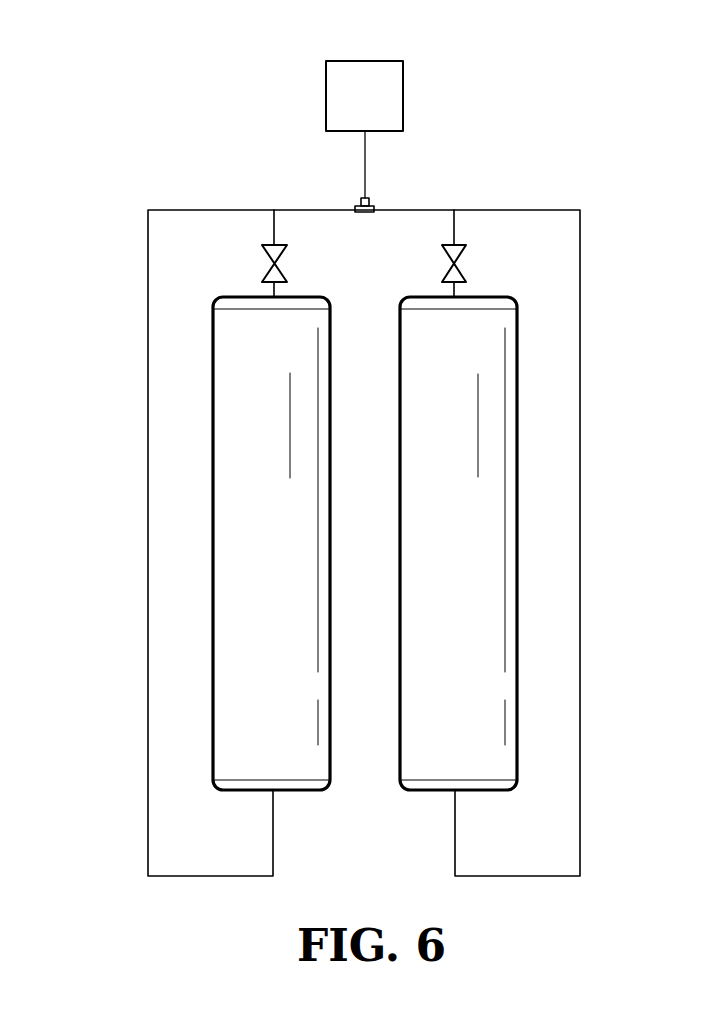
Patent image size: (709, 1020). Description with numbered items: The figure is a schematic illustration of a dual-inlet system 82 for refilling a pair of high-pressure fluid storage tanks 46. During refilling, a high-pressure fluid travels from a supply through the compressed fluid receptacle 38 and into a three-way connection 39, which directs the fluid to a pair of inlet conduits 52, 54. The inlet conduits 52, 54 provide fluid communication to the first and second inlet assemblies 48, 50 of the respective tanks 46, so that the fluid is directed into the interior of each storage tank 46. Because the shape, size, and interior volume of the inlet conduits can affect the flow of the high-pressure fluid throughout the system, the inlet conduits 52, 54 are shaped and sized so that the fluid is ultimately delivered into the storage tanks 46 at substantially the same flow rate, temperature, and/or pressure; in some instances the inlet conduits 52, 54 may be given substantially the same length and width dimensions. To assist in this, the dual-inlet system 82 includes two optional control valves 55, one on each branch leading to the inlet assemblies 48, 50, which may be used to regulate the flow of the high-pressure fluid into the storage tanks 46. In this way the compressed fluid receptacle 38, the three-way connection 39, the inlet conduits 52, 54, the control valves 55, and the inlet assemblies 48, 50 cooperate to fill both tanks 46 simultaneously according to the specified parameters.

The dual-inlet system 82 is at (561, 129).
The inlet conduit 54 is at (148, 592).
The compressed fluid receptacle 38 is at (332, 91).
The three-way connection 39 is at (373, 203).
The inlet conduit 52 is at (273, 226).
The control valve 55 is at (273, 263).
The first inlet assembly 48 is at (275, 297).
The high-pressure fluid storage tank 46 is at (288, 565).
The second inlet assembly 50 is at (273, 790).